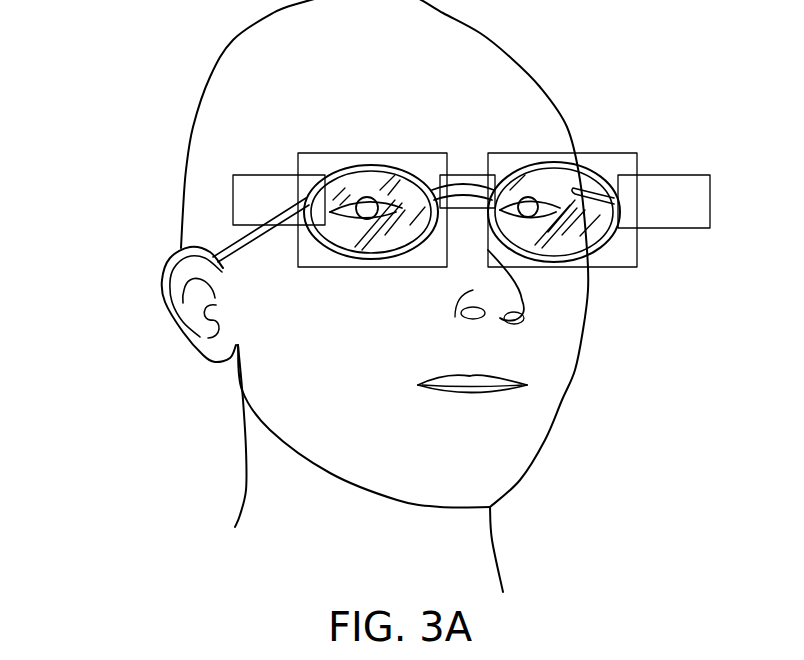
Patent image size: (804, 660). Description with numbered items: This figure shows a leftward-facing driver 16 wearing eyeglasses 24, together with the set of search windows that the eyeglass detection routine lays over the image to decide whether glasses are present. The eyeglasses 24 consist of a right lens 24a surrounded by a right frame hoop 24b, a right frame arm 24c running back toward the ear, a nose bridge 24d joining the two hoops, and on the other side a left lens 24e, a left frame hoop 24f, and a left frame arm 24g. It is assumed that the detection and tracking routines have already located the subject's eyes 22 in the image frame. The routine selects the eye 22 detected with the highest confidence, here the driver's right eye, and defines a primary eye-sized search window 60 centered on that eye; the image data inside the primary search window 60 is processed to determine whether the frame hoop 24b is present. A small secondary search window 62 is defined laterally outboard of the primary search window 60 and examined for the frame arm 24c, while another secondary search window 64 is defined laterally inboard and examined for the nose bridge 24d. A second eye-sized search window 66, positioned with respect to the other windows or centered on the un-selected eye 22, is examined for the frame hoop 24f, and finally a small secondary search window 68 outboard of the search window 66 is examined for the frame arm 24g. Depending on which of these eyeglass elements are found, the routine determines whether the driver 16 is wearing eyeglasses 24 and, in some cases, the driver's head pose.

The driver 16 is at (160, 205).
The eyes 22 is at (365, 200).
The eyeglasses 24 is at (450, 196).
The right lens 24a is at (335, 250).
The right frame hoop 24b is at (372, 262).
The right frame arm 24c is at (242, 250).
The nose bridge 24d is at (450, 175).
The left lens 24e is at (592, 233).
The left frame hoop 24f is at (610, 233).
The left frame arm 24g is at (590, 188).
The primary eye-sized search window 60 is at (308, 153).
The secondary search window 62 is at (252, 173).
The secondary search window 64 is at (482, 178).
The eye-sized search window 66 is at (637, 240).
The secondary search window 68 is at (695, 175).